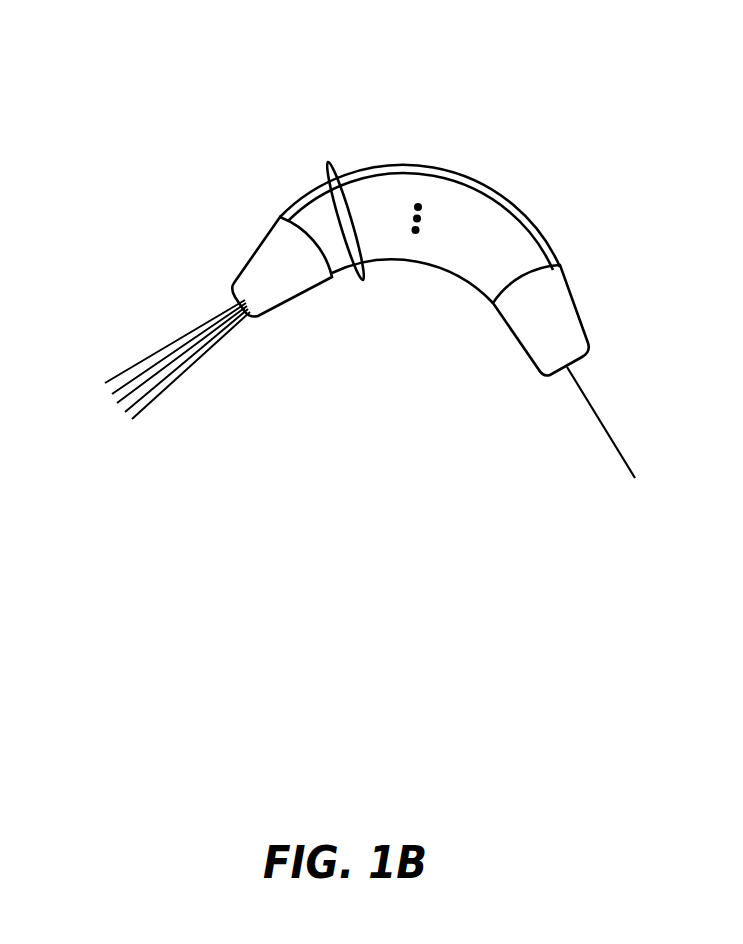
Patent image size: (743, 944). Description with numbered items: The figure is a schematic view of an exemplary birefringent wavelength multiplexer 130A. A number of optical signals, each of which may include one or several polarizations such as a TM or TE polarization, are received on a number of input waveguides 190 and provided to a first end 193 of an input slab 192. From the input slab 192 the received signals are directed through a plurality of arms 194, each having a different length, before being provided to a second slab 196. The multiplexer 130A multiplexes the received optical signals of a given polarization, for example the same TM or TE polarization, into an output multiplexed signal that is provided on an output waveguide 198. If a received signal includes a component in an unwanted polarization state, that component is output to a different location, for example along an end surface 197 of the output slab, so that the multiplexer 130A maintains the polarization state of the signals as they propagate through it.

The birefringent wavelength multiplexer 130A is at (146, 58).
The input waveguides 190 is at (128, 342).
The input slab 192 is at (282, 267).
The first end of input slab 193 is at (228, 300).
The arms 194 is at (328, 165).
The second slab 196 is at (541, 320).
The end surface of output slab 197 is at (580, 360).
The output waveguide 198 is at (613, 438).